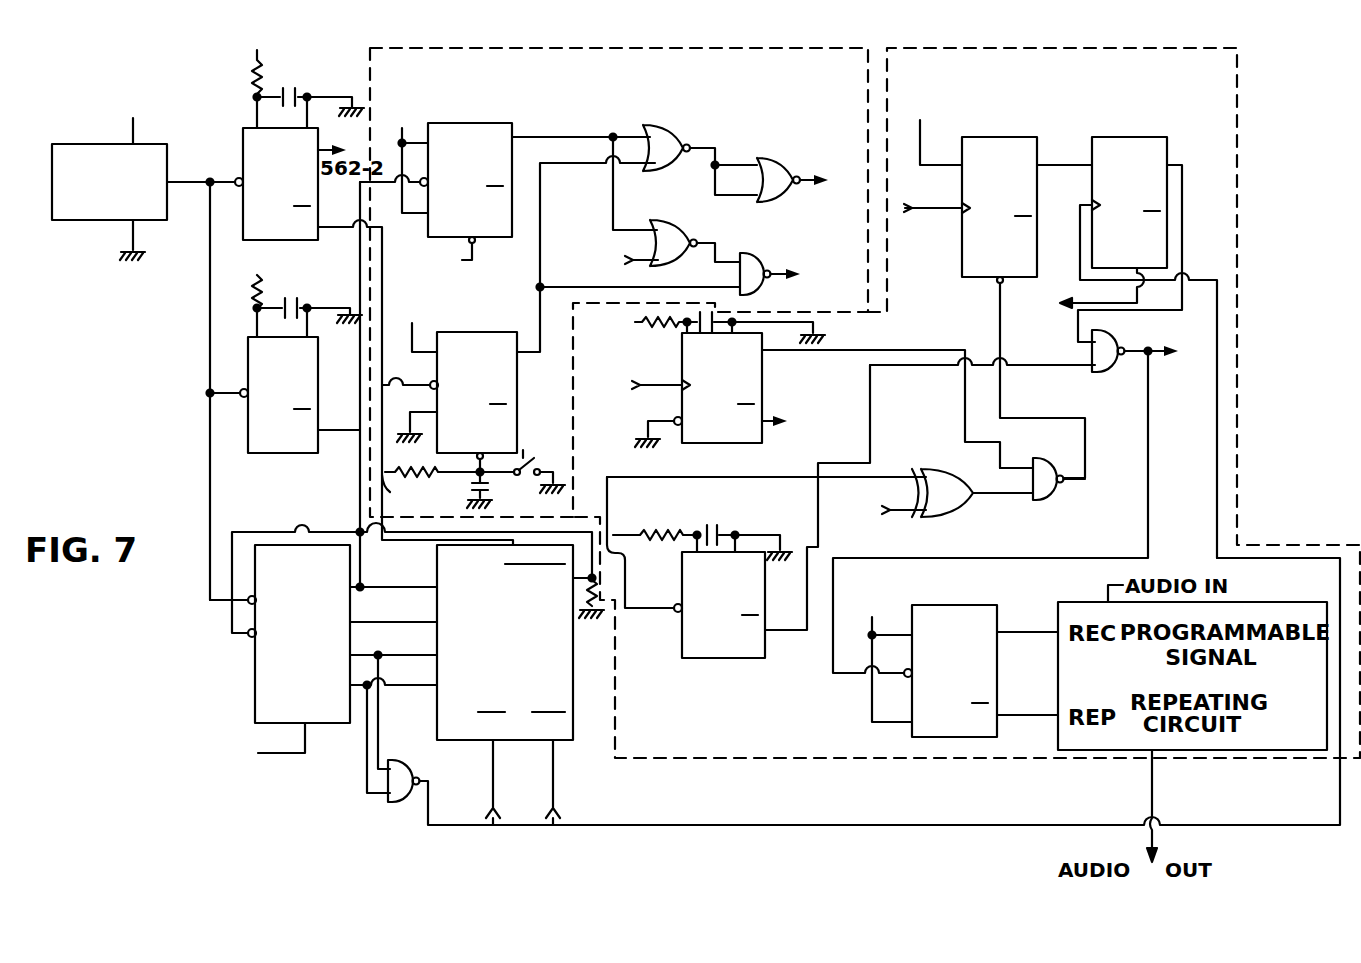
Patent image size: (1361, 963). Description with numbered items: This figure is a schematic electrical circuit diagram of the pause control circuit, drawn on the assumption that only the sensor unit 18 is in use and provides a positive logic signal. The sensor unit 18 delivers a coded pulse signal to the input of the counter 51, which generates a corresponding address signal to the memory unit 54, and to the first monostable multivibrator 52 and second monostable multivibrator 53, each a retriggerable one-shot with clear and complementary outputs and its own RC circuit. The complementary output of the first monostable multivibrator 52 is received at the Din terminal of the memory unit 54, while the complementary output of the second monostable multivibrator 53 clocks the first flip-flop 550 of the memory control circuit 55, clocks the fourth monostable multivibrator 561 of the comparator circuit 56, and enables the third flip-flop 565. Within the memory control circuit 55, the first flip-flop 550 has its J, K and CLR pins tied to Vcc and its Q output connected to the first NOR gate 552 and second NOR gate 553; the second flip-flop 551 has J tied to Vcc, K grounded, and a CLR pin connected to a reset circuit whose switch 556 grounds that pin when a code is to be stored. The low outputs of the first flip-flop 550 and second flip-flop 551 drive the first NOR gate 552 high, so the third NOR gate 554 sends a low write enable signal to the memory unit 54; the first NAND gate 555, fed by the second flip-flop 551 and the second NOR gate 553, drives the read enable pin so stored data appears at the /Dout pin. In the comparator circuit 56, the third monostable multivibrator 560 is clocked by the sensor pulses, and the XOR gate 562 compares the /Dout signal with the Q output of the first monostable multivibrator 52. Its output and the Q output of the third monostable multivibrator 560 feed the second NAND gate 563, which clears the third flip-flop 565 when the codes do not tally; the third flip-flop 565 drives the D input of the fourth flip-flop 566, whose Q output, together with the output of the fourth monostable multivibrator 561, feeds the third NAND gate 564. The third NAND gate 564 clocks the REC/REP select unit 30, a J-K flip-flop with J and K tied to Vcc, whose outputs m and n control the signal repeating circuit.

The sensor unit 18 is at (100, 222).
The REC/REP select unit 30 is at (983, 590).
The counter 51 is at (255, 655).
The first monostable multivibrator 52 is at (312, 241).
The second monostable multivibrator 53 is at (268, 453).
The memory unit 54 is at (573, 727).
The memory control circuit 55 is at (822, 72).
The comparator circuit 56 is at (848, 760).
The first flip-flop 550 is at (484, 122).
The second flip-flop 551 is at (482, 332).
The first NOR gate 552 is at (666, 124).
The second NOR gate 553 is at (670, 218).
The third NOR gate 554 is at (770, 157).
The first NAND gate 555 is at (760, 254).
The switch 556 is at (527, 462).
The third monostable multivibrator 560 is at (745, 443).
The fourth monostable multivibrator 561 is at (717, 658).
The XOR gate 562 is at (955, 517).
The second NAND gate 563 is at (1047, 500).
The third NAND gate 564 is at (1105, 372).
The third flip-flop 565 is at (997, 137).
The fourth flip-flop 566 is at (1133, 137).